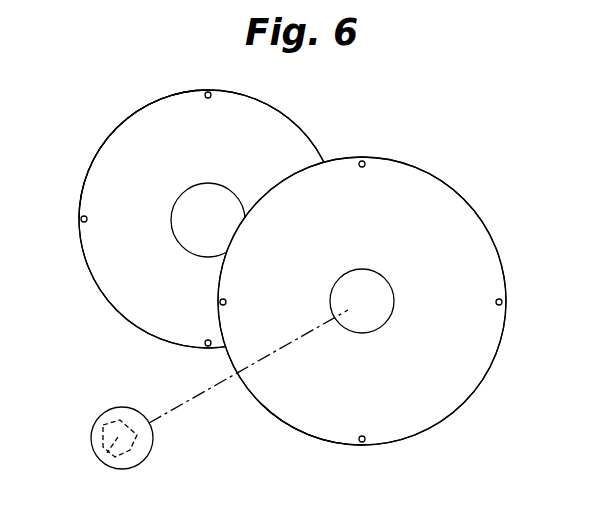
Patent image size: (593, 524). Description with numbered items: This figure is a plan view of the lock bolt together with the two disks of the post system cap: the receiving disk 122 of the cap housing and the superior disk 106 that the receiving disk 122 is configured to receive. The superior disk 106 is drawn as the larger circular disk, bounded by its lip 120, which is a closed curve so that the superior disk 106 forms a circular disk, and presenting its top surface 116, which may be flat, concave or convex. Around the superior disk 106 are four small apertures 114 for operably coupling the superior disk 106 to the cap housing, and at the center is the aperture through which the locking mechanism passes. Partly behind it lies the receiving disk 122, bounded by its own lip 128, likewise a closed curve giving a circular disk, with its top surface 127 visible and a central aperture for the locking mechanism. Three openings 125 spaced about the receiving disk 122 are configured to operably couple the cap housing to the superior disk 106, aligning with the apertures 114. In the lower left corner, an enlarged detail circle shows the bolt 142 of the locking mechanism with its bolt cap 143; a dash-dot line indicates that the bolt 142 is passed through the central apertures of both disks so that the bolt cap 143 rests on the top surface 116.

The superior disk 106 is at (478, 240).
The apertures 114 is at (499, 305).
The top surface 116 is at (408, 412).
The lip 120 is at (440, 177).
The receiving disk 122 is at (275, 132).
The openings 125 is at (209, 97).
The top surface 127 is at (108, 157).
The lip 128 is at (247, 92).
The bolt 142 is at (122, 470).
The bolt cap 143 is at (110, 452).